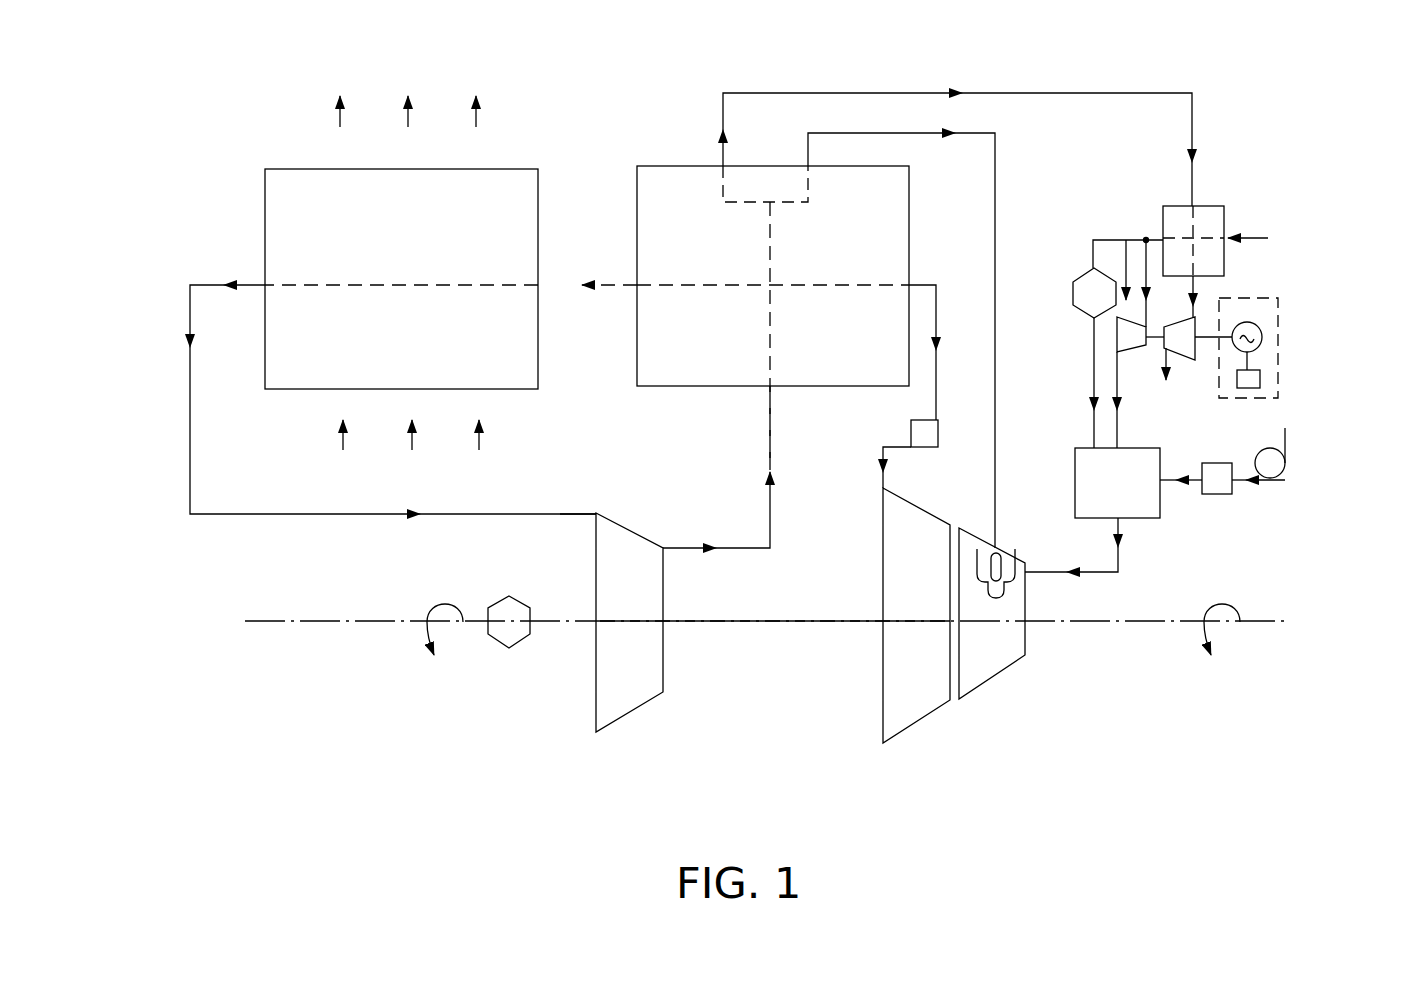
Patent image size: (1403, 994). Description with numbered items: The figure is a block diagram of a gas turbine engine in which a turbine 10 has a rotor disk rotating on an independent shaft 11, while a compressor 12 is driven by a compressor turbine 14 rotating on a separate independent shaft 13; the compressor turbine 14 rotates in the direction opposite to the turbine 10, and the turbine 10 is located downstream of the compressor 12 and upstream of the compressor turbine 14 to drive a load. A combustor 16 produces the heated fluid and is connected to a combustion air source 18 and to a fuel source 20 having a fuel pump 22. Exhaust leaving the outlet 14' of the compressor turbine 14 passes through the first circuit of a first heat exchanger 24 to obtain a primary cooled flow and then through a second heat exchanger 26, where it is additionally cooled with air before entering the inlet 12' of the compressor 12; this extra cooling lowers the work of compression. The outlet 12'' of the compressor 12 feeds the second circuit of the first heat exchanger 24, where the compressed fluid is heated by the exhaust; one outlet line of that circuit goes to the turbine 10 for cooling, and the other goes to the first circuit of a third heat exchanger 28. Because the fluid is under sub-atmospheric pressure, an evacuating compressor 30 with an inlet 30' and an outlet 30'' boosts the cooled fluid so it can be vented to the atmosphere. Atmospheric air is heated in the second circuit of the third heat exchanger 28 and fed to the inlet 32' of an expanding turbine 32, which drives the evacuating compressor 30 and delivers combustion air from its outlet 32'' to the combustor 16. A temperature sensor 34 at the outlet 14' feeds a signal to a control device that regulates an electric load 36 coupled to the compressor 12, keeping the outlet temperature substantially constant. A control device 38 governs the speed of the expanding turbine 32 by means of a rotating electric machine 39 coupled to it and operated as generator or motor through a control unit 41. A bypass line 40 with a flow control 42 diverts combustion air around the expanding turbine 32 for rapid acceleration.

The turbine 10 is at (993, 678).
The independent shaft 11 is at (1100, 622).
The compressor 12 is at (629, 654).
The inlet of compressor 12' is at (588, 475).
The outlet of compressor 12'' is at (716, 510).
The independent shaft 13 is at (760, 622).
The compressor turbine 14 is at (916, 643).
The outlet of compressor turbine 14' is at (858, 464).
The combustor 16 is at (1140, 518).
The combustion air source 18 is at (1128, 240).
The fuel source 20 is at (1252, 503).
The fuel pump 22 is at (1288, 465).
The first heat exchanger 24 is at (745, 318).
The second heat exchanger 26 is at (393, 305).
The third heat exchanger 28 is at (1196, 205).
The evacuating compressor 30 is at (1198, 377).
The inlet of evacuating compressor 30' is at (1230, 290).
The outlet of evacuating compressor 30'' is at (1158, 382).
The expanding turbine 32 is at (1102, 332).
The inlet of expanding turbine 32' is at (1077, 354).
The outlet of expanding turbine 32'' is at (1074, 400).
The temperature sensor 34 is at (911, 426).
The electric load 36 is at (505, 650).
The control device 38 is at (1286, 294).
The rotating electric machine 39 is at (1262, 337).
The bypass line 40 is at (1099, 240).
The control unit 41 is at (1260, 380).
The flow control 42 is at (1080, 272).